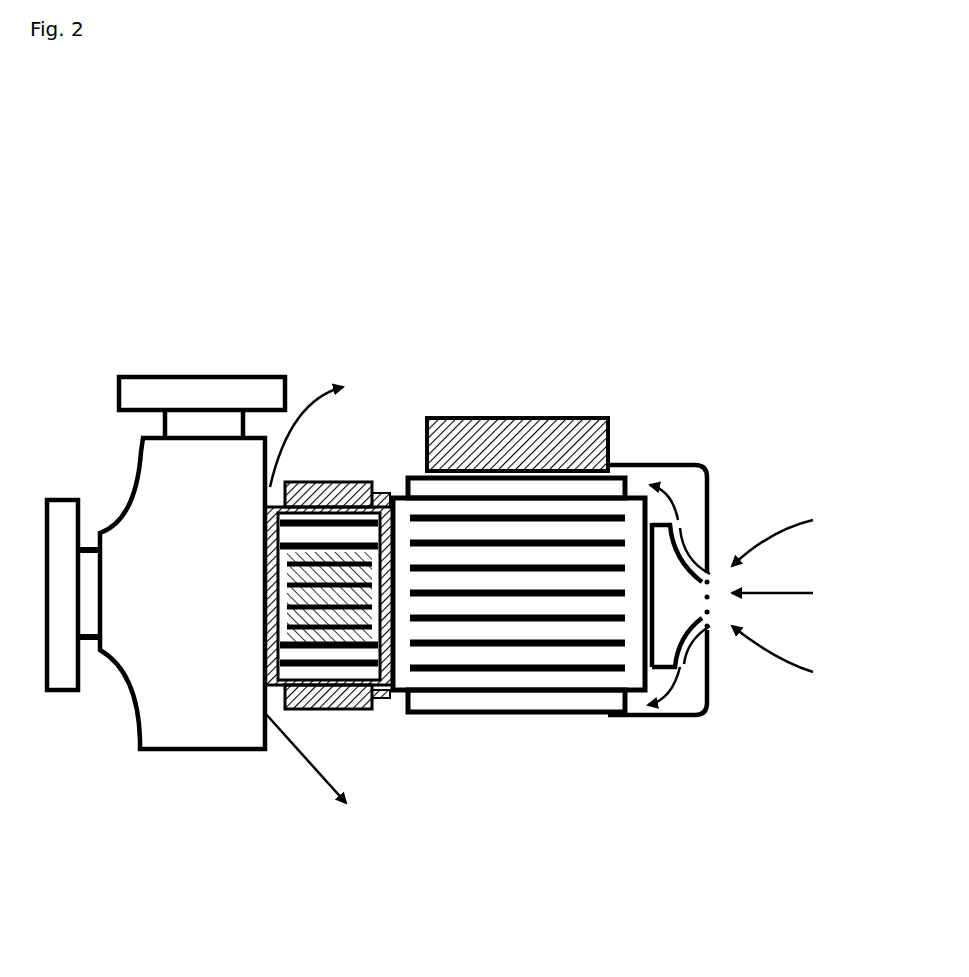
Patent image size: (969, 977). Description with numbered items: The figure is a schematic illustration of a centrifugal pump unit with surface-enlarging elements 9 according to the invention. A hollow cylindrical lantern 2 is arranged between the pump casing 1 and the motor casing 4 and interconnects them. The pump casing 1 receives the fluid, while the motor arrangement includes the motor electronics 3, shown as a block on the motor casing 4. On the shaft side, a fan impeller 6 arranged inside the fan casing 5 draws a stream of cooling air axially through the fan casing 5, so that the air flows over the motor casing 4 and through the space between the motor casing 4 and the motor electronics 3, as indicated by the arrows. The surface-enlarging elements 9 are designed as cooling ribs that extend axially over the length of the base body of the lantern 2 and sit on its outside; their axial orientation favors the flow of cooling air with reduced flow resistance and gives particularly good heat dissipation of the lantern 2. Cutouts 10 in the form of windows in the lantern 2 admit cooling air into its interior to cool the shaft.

The pump casing 1 is at (158, 478).
The lantern 2 is at (310, 628).
The motor electronics 3 is at (495, 430).
The motor casing 4 is at (502, 677).
The fan casing 5 is at (698, 463).
The fan impeller 6 is at (703, 623).
The surface-enlarging elements 9 is at (328, 482).
The cutouts 10 is at (348, 655).